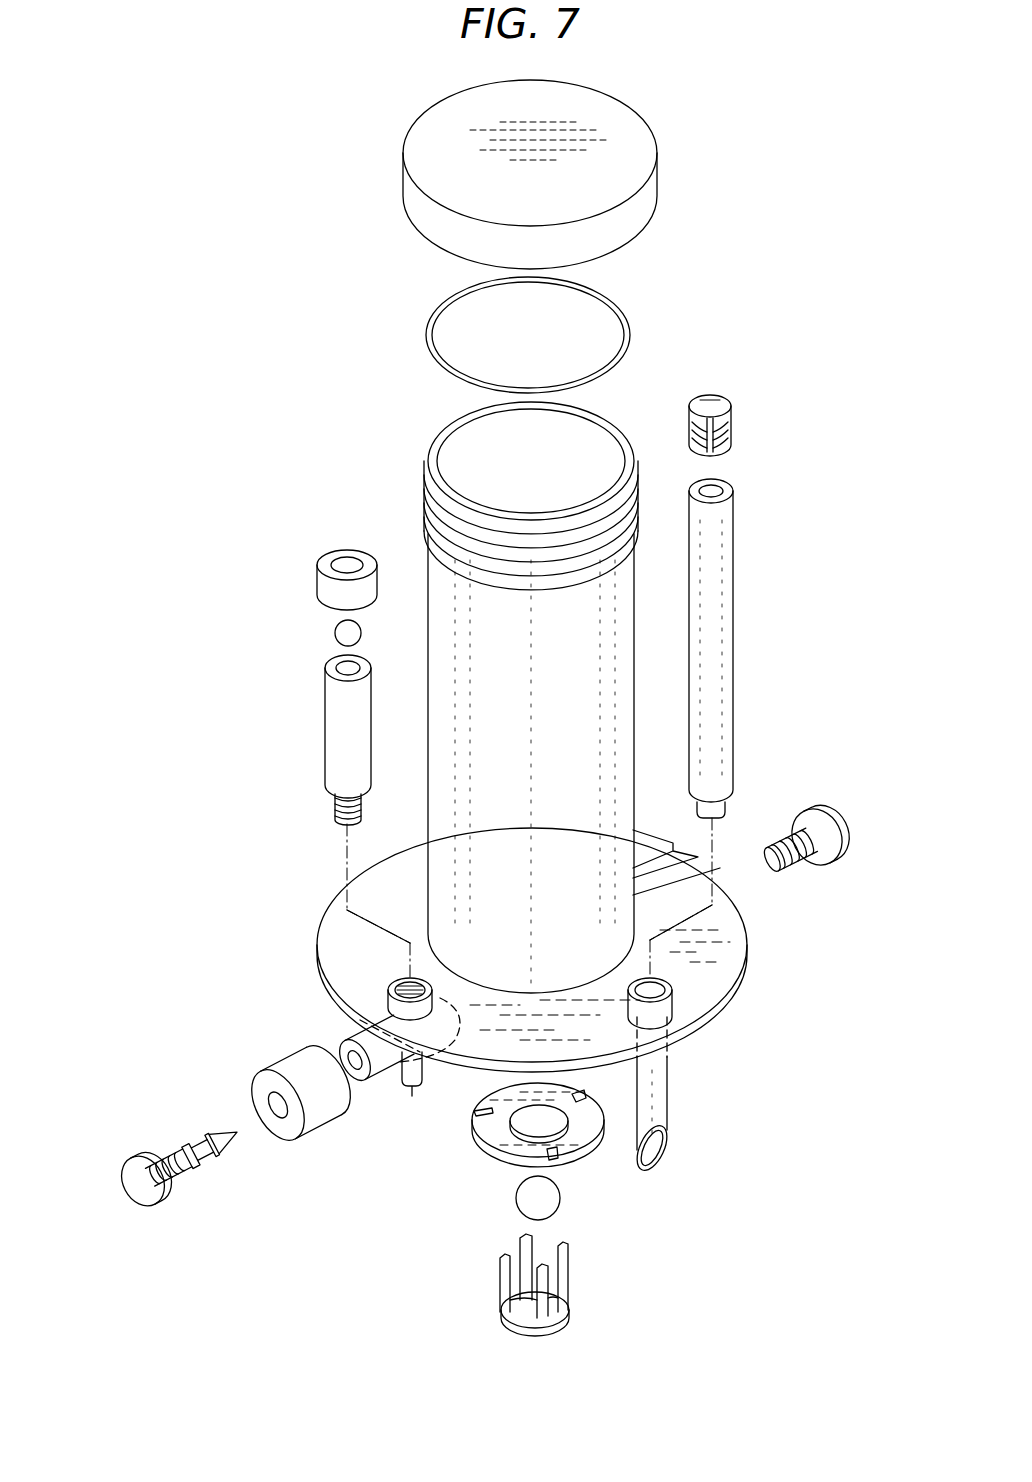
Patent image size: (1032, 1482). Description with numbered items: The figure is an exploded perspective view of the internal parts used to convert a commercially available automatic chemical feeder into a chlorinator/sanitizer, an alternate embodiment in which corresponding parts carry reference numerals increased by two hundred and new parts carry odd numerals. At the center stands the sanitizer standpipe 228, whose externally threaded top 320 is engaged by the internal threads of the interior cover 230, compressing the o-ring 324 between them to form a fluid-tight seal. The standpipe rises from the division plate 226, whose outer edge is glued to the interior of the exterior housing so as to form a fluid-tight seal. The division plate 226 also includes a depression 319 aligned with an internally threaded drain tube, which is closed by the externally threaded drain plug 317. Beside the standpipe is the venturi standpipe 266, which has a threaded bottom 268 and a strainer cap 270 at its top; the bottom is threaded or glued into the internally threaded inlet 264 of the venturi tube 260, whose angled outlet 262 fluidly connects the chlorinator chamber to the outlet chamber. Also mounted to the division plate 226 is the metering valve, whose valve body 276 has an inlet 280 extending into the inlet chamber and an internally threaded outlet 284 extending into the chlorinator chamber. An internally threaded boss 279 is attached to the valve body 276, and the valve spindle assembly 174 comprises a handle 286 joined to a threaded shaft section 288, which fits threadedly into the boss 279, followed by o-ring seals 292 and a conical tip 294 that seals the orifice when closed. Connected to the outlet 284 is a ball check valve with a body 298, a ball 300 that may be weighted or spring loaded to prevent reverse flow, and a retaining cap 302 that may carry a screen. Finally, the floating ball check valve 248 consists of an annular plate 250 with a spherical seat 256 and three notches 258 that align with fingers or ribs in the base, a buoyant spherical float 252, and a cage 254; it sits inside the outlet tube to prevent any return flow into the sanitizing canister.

The metering valve spindle assembly 174 is at (191, 1161).
The division plate 226 is at (722, 948).
The sanitizer standpipe 228 is at (440, 672).
The interior cover 230 is at (650, 202).
The floating ball check valve 248 is at (492, 1228).
The annular plate 250 is at (584, 1160).
The spherical float 252 is at (526, 1202).
The cage 254 is at (560, 1296).
The spherical seat 256 is at (530, 1118).
The notches 258 is at (580, 1094).
The venturi tube 260 is at (680, 1098).
The angled outlet 262 is at (664, 1150).
The internally threaded inlet 264 is at (668, 1004).
The venturi standpipe 266 is at (722, 612).
The threaded bottom 268 is at (714, 812).
The strainer cap 270 is at (740, 422).
The valve body 276 is at (338, 1040).
The internally threaded boss 279 is at (313, 1102).
The inlet 280 is at (410, 1094).
The internally threaded outlet 284 is at (388, 992).
The handle 286 is at (155, 1218).
The threaded shaft section 288 is at (209, 1196).
The o-ring seals 292 is at (181, 1115).
The conical tip 294 is at (227, 1101).
The ball check valve body 298 is at (332, 752).
The ball 300 is at (342, 640).
The retaining cap 302 is at (330, 592).
The externally threaded drain plug 317 is at (836, 822).
The depression 319 is at (650, 862).
The externally threaded top 320 is at (636, 476).
The o-ring 324 is at (628, 314).